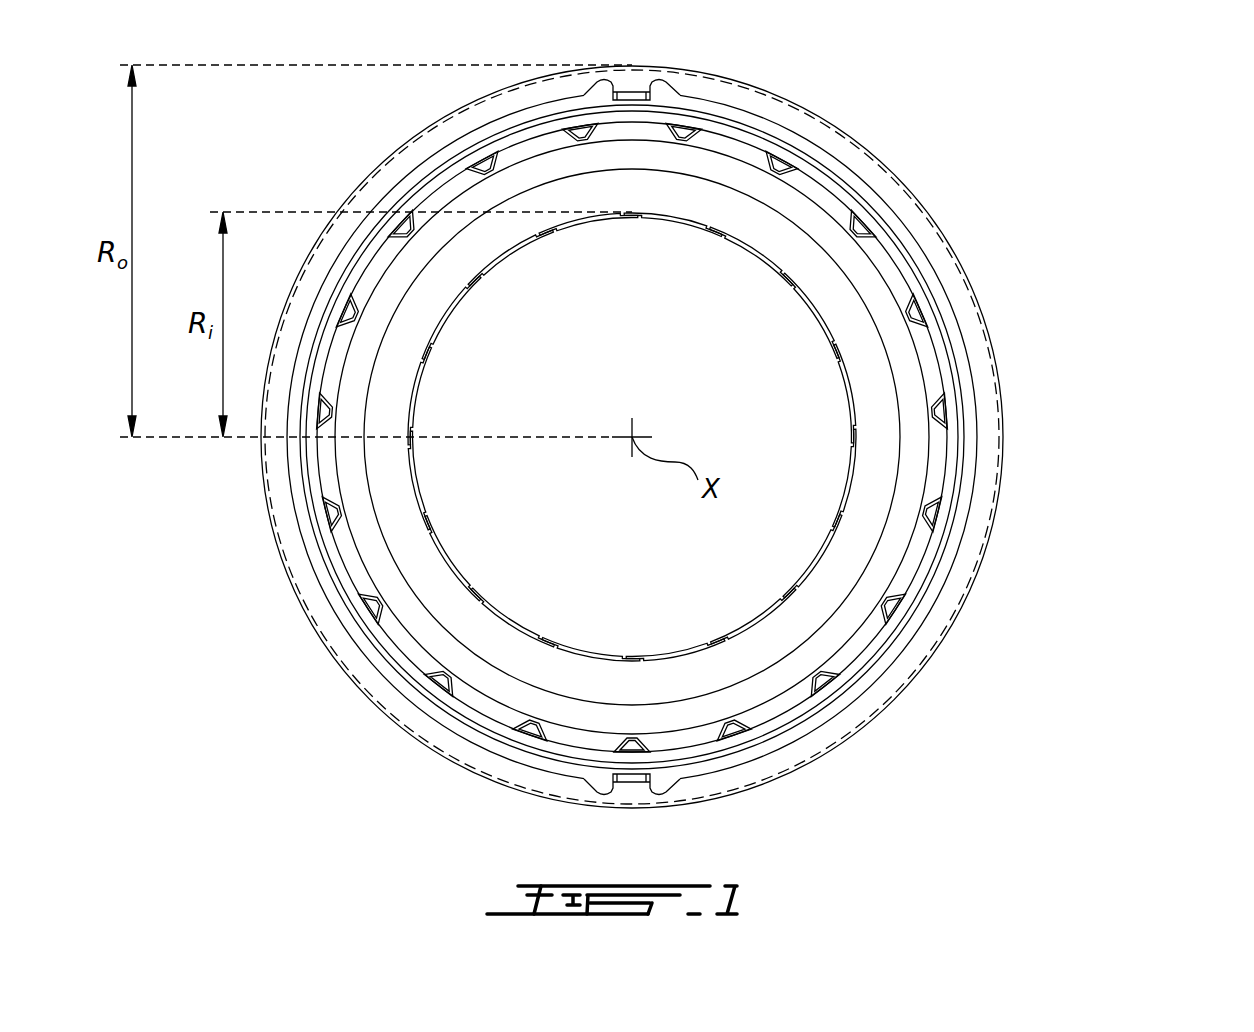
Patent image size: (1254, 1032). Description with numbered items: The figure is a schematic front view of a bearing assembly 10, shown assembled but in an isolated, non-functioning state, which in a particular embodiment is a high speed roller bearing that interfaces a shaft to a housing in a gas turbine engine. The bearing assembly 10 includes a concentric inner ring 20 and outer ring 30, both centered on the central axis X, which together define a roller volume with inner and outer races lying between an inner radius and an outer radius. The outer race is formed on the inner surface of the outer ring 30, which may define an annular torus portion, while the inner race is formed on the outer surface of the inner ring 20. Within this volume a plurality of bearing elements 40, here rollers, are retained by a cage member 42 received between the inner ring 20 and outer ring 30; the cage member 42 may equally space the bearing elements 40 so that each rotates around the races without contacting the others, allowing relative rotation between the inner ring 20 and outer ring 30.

The bearing assembly 10 is at (1122, 140).
The inner ring 20 is at (777, 223).
The outer ring 30 is at (975, 323).
The bearing elements 40 is at (822, 207).
The cage member 42 is at (860, 234).